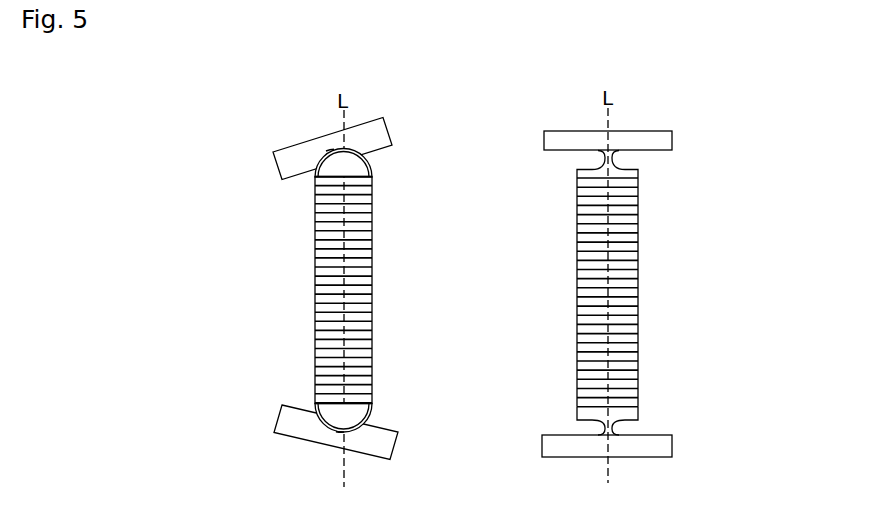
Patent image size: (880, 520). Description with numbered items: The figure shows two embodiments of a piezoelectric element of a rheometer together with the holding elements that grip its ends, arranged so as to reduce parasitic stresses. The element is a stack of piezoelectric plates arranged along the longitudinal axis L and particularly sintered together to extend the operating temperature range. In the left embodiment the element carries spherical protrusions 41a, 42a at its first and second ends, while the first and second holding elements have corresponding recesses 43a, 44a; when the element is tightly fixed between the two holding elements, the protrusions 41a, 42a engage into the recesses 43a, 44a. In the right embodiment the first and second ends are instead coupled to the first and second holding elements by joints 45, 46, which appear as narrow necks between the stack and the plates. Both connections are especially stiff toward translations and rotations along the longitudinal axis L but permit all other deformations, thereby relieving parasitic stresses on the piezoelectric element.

The spherical protrusion 41a is at (365, 154).
The spherical protrusion 42a is at (367, 422).
The recess 43a is at (328, 148).
The recess 44a is at (333, 436).
The joint 45 is at (614, 157).
The joint 46 is at (614, 428).